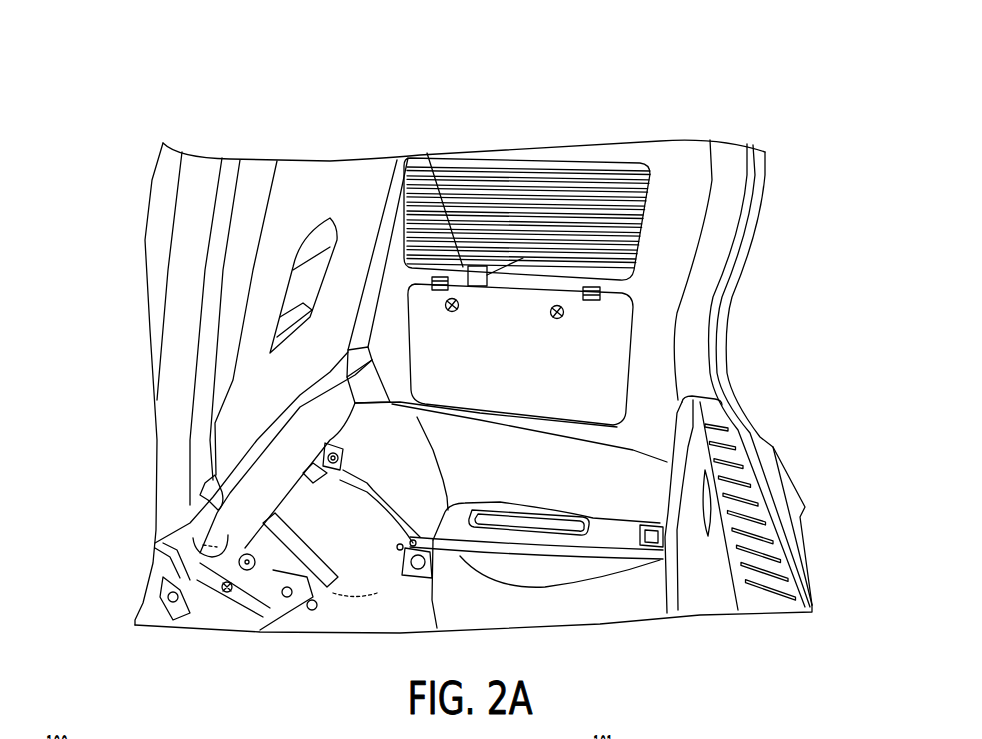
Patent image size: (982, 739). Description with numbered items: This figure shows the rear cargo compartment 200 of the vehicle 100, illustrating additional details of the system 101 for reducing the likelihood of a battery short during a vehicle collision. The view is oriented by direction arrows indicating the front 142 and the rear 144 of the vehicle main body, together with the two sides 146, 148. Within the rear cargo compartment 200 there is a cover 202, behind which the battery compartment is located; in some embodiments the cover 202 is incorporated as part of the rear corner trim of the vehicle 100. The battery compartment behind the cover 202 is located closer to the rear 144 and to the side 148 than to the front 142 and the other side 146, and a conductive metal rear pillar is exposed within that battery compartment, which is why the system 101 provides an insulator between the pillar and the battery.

The vehicle 100 is at (95, 100).
The system 101 is at (321, 80).
The front 142 is at (150, 85).
The rear 144 is at (650, 85).
The side 146 is at (353, 645).
The side 148 is at (587, 147).
The rear cargo compartment 200 is at (540, 612).
The cover 202 is at (617, 347).